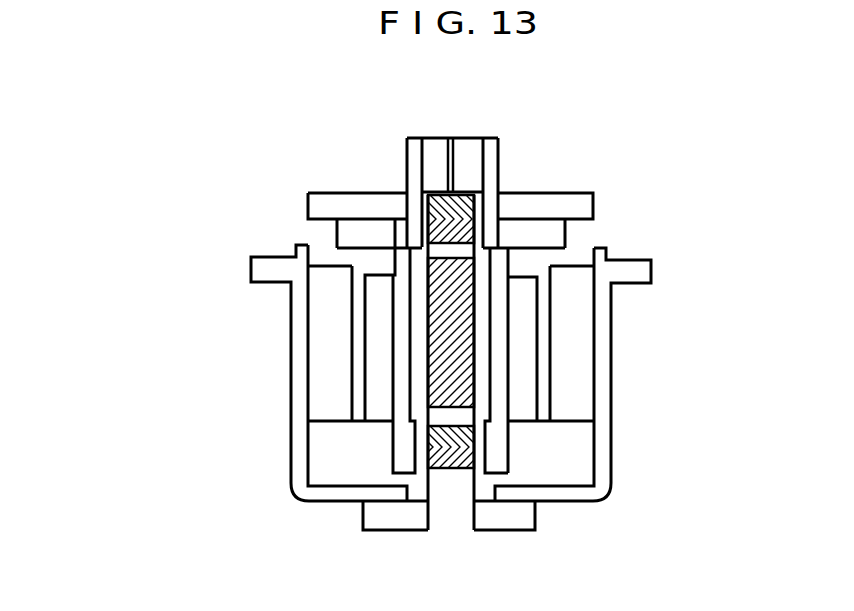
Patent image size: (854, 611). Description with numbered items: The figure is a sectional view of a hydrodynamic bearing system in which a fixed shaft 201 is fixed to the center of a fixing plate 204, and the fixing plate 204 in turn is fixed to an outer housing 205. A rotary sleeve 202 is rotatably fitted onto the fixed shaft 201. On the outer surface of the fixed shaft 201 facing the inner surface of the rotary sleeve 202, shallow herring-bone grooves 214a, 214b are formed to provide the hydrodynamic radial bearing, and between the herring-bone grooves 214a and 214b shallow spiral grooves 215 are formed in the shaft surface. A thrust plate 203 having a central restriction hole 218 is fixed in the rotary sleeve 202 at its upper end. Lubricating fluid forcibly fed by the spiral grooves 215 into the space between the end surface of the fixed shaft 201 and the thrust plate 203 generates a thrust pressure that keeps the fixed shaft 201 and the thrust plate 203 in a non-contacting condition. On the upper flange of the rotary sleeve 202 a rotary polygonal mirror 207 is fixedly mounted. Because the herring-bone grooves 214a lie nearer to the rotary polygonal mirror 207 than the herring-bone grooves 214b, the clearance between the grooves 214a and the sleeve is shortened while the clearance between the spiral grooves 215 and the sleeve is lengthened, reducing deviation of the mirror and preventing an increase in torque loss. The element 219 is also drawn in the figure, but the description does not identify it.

The shaft 201 is at (452, 513).
The outer sleeve wall 202 is at (490, 155).
The inner sleeve wall 203 is at (437, 155).
The base plate 204 is at (507, 517).
The housing cup 205 is at (597, 490).
The flange plate 207 is at (528, 204).
The upper piezoelectric element 214a is at (432, 218).
The lower piezoelectric element 214b is at (432, 448).
The displacement element 215 is at (432, 330).
The pin 218 is at (458, 139).
The ring 219 is at (550, 238).